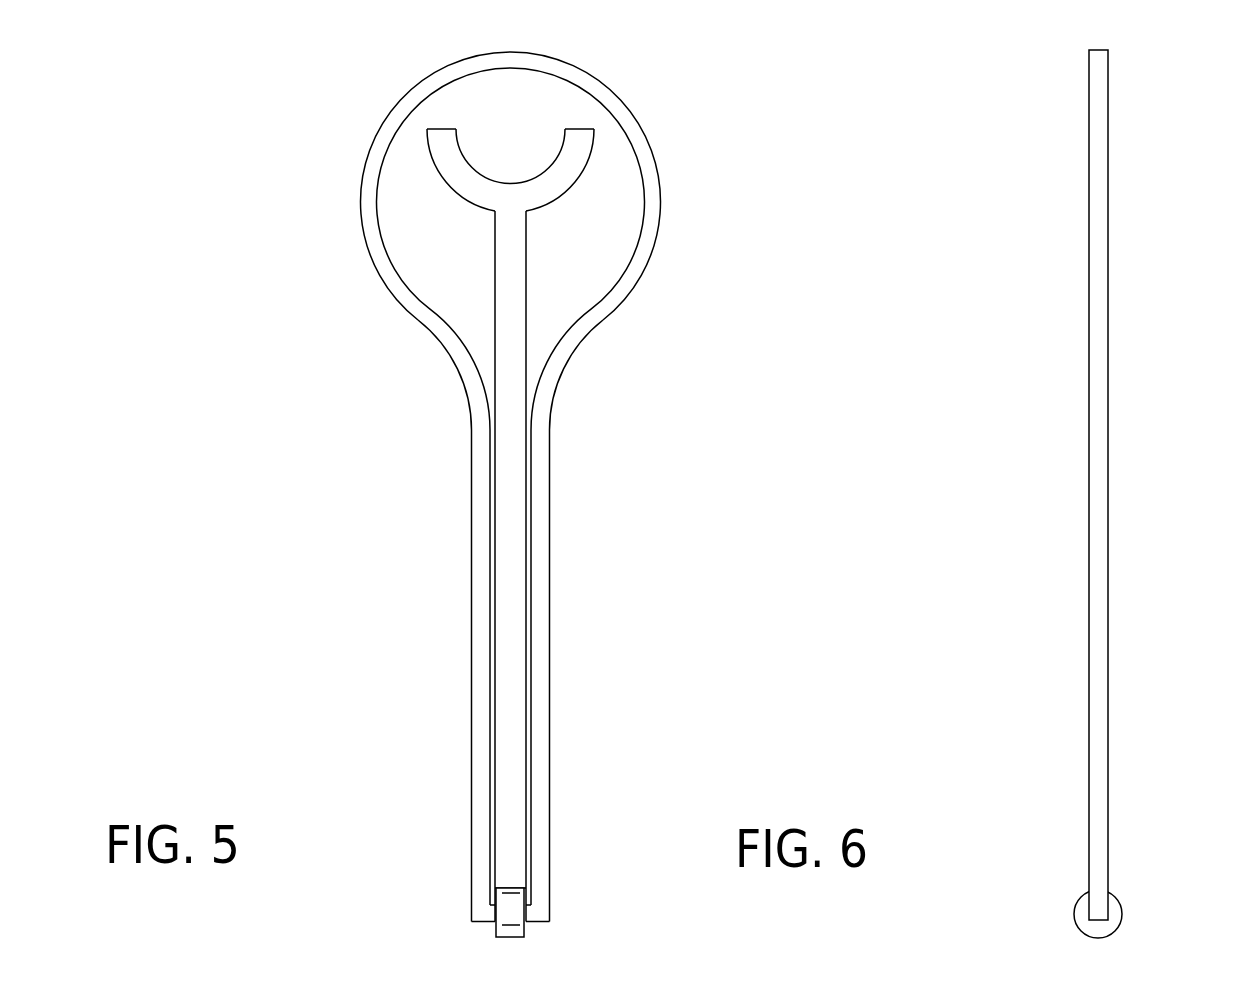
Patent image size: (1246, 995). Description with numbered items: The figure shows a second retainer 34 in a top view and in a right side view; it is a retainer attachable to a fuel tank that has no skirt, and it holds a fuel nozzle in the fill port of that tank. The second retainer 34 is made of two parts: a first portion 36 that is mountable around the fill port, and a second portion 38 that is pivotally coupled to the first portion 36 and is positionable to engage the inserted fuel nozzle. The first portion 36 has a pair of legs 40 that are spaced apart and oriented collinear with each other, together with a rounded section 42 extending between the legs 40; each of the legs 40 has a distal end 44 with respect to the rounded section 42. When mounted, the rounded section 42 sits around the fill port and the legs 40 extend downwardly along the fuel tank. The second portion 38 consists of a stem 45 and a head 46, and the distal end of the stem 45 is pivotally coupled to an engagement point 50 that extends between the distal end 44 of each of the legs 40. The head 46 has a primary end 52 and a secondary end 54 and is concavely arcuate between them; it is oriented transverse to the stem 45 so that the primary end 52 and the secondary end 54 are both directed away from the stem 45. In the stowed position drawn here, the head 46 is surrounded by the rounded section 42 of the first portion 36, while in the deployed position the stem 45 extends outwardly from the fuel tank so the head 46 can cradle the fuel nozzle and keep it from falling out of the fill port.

In FIG. 5, the second retainer 34 is at (685, 189).
In FIG. 5, the first portion 36 is at (428, 349).
In FIG. 6, the first portion 36 is at (1135, 471).
In FIG. 5, the second portion 38 is at (548, 320).
In FIG. 5, the legs 40 is at (472, 592).
In FIG. 5, the rounded section 42 is at (545, 57).
In FIG. 5, the distal end 44 is at (472, 922).
In FIG. 5, the stem 45 is at (502, 452).
In FIG. 5, the head 46 is at (478, 168).
In FIG. 5, the engagement point 50 is at (524, 925).
In FIG. 5, the primary end 52 is at (445, 130).
In FIG. 5, the secondary end 54 is at (578, 129).